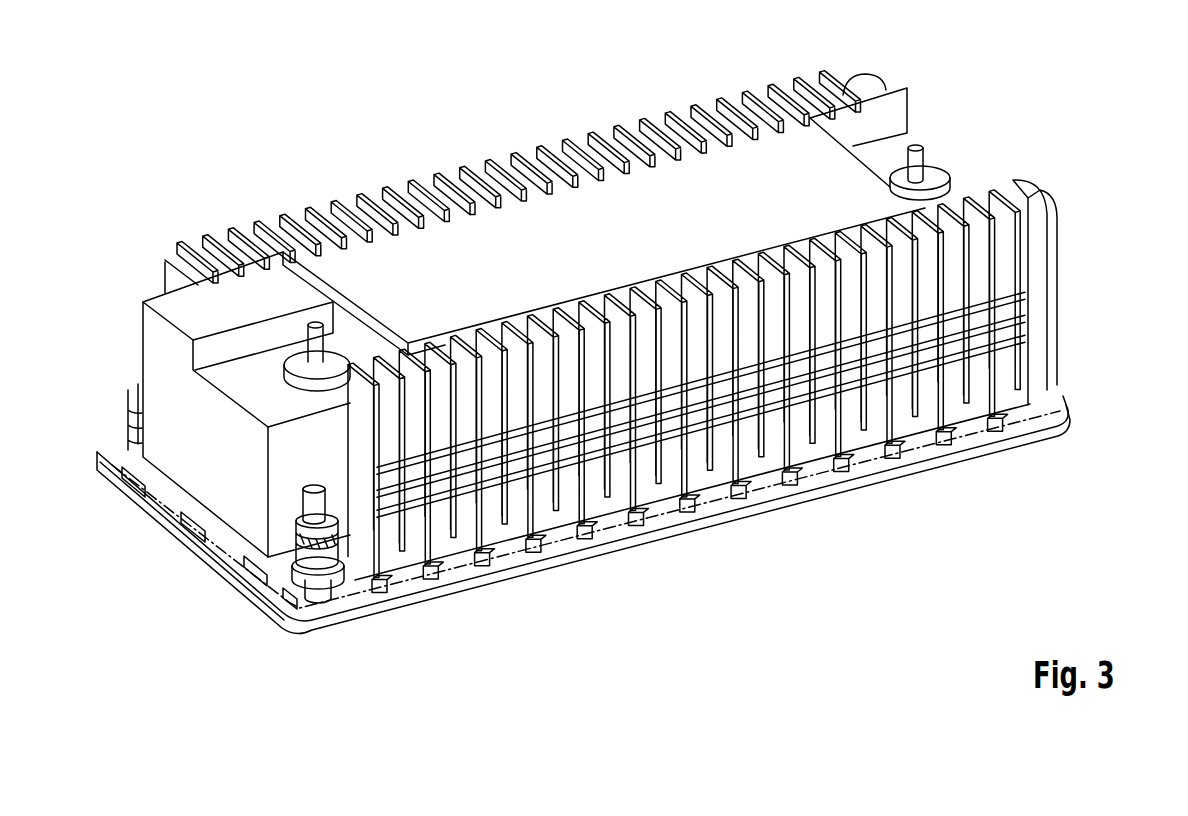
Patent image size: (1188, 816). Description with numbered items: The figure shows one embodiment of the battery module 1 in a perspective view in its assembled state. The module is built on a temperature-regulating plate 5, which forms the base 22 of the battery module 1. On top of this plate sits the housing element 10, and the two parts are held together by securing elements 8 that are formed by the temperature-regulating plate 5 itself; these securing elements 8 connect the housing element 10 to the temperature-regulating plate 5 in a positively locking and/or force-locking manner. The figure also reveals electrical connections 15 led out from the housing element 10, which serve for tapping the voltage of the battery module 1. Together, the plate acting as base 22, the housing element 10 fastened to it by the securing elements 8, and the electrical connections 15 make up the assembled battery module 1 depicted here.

The battery module 1 is at (155, 121).
The temperature-regulating plate 5 is at (583, 515).
The base 22 is at (666, 535).
The securing elements 8 is at (763, 483).
The housing element 10 is at (1040, 272).
The electrical connections 15 is at (310, 342).